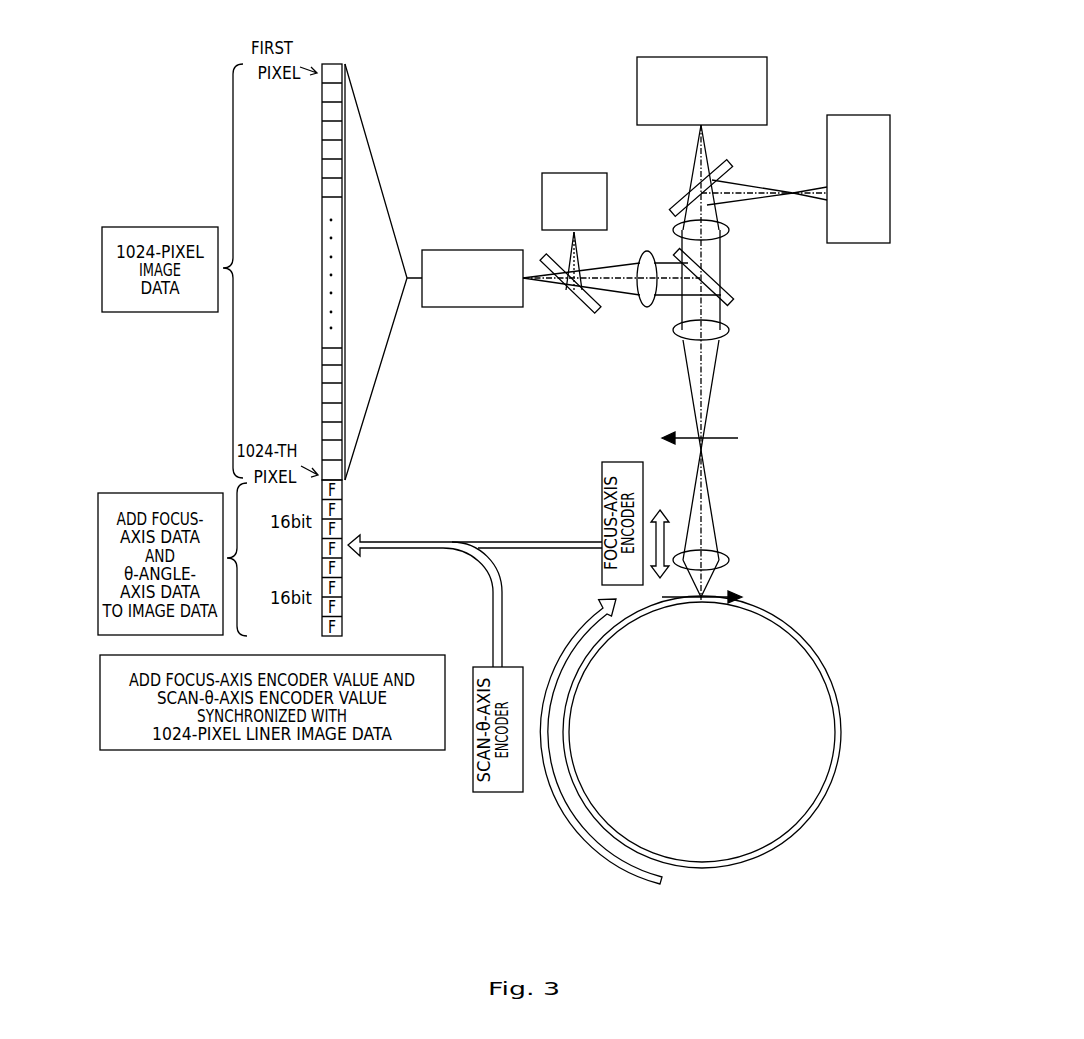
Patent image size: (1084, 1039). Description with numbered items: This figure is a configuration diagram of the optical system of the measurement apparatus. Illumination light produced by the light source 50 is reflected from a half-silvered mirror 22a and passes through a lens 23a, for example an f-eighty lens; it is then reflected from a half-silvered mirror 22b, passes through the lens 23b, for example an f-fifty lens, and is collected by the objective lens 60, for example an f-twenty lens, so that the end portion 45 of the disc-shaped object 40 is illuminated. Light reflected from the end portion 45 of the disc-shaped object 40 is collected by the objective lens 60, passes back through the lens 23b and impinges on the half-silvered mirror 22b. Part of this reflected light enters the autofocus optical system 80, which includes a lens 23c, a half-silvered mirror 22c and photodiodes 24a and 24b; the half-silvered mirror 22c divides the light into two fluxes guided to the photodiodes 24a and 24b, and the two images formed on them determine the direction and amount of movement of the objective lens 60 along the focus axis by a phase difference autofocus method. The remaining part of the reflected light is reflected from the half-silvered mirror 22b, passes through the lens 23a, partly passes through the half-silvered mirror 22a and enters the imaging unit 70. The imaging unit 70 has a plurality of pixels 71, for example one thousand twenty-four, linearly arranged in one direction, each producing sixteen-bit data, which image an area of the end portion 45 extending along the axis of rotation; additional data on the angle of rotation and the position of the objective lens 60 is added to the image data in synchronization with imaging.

The pixel 71 is at (330, 75).
The imaging unit 70 is at (470, 310).
The light source 50 is at (571, 168).
The half-silvered mirror 22a is at (583, 312).
The lens 23a is at (646, 310).
The half-silvered mirror 22b is at (735, 297).
The lens 23b is at (733, 331).
The half-silvered mirror 22c is at (730, 166).
The lens 23c is at (732, 231).
The photodiode 24a is at (712, 57).
The photodiode 24b is at (838, 115).
The autofocus optical system 80 is at (820, 44).
The objective lens 60 is at (722, 558).
The end portion 45 is at (722, 588).
The disc-shaped object 40 is at (832, 732).